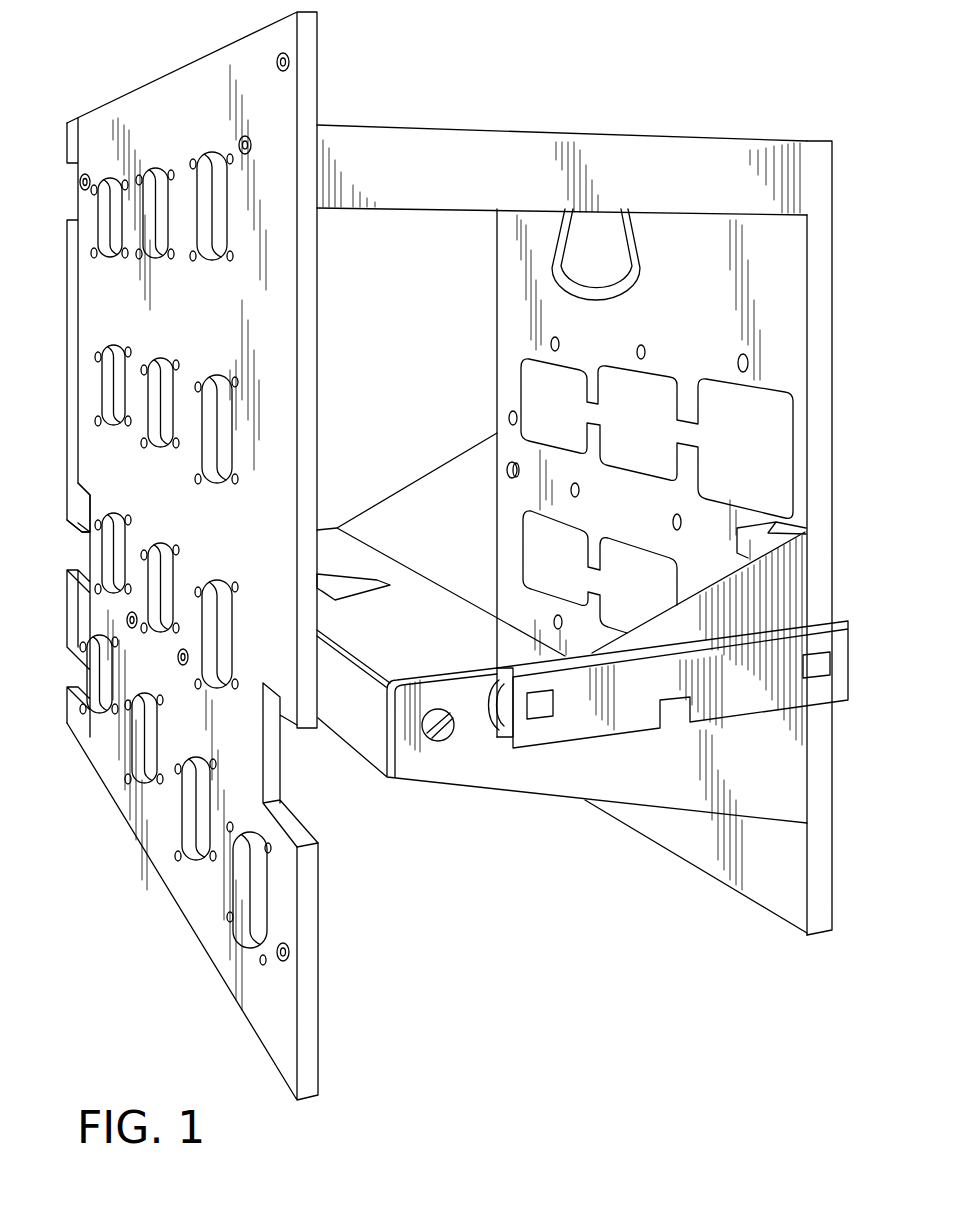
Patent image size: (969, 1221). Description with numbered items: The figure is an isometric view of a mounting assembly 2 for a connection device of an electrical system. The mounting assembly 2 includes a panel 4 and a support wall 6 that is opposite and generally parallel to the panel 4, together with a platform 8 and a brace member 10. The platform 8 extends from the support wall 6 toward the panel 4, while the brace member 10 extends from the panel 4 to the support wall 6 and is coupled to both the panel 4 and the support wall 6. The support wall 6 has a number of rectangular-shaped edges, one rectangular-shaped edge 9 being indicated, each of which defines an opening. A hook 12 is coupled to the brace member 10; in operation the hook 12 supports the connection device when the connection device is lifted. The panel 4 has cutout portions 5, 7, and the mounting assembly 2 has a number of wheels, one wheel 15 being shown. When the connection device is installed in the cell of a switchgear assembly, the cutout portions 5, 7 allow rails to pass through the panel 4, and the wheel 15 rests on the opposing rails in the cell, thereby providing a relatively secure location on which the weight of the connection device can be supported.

The mounting assembly 2 is at (486, 875).
The panel 4 is at (150, 102).
The cutout portion 5 is at (270, 753).
The support wall 6 is at (508, 292).
The cutout portion 7 is at (90, 557).
The platform 8 is at (586, 788).
The rectangular-shaped edge 9 is at (725, 377).
The brace member 10 is at (633, 150).
The hook 12 is at (648, 266).
The wheel 15 is at (496, 705).